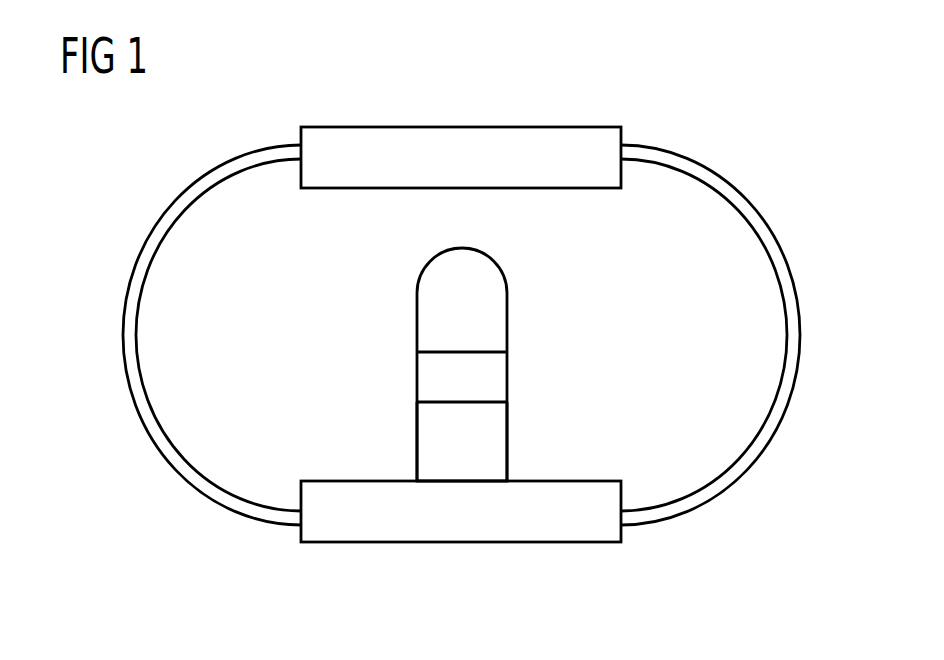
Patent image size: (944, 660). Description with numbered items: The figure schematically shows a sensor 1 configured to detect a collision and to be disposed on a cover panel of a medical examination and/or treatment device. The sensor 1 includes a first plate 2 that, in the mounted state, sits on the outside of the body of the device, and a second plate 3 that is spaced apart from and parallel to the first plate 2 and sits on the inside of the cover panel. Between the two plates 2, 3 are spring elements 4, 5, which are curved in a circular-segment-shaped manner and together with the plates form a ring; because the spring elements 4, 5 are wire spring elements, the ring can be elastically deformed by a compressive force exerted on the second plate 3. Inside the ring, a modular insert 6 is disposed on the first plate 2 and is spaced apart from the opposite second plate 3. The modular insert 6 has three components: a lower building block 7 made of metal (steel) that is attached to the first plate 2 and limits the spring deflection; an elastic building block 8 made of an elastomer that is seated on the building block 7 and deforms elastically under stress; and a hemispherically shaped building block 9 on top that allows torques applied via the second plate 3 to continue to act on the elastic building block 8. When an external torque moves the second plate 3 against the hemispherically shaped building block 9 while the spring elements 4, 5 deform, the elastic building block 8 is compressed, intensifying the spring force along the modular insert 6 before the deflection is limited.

The sensor 1 is at (122, 507).
The first plate 2 is at (477, 543).
The second plate 3 is at (462, 127).
The spring element 4 is at (130, 323).
The spring element 5 is at (795, 323).
The modular insert 6 is at (604, 285).
The building block 7 is at (484, 452).
The elastic building block 8 is at (484, 377).
The hemispherically shaped building block 9 is at (484, 326).